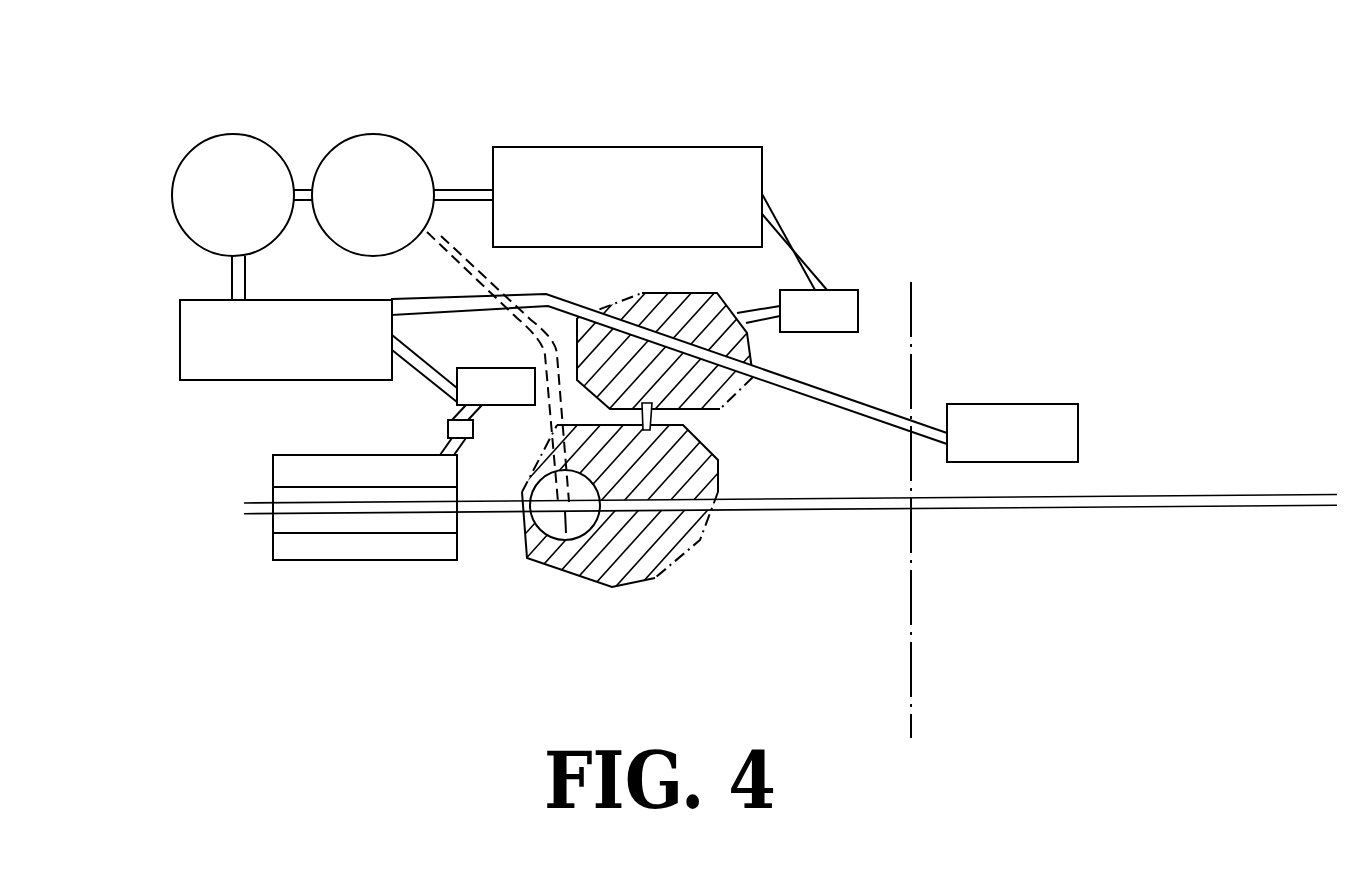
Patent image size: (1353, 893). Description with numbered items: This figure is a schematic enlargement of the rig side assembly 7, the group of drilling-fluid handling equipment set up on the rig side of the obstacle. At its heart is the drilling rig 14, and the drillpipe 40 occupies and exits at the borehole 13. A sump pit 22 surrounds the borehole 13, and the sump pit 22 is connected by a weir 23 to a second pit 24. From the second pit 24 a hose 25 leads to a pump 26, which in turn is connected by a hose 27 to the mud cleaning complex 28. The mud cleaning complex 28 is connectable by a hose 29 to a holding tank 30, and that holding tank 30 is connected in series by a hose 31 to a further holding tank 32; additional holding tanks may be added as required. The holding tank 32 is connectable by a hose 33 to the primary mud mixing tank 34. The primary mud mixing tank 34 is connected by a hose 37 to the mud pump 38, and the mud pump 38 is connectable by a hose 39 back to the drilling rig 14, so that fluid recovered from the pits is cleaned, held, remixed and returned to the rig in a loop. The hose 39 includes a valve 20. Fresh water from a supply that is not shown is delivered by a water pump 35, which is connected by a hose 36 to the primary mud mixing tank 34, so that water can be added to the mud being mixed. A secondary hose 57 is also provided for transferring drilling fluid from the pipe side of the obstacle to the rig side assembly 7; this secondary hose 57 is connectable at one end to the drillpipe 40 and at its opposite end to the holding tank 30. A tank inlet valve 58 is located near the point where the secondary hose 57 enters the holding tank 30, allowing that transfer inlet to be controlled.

The rig side assembly 7 is at (784, 43).
The borehole 13 is at (535, 565).
The drilling rig 14 is at (385, 543).
The valve 20 is at (447, 432).
The sump pit 22 is at (630, 567).
The weir 23 is at (652, 417).
The second pit 24 is at (680, 303).
The hose 25 is at (770, 313).
The pump 26 is at (843, 303).
The hose 27 is at (803, 240).
The mud cleaning complex 28 is at (640, 175).
The hose 29 is at (457, 183).
The holding tank 30 is at (380, 162).
The hose 31 is at (298, 176).
The holding tank 32 is at (204, 168).
The hose 33 is at (237, 277).
The primary mud mixing tank 34 is at (228, 365).
The water pump 35 is at (1013, 420).
The hose 36 is at (880, 407).
The hose 37 is at (423, 370).
The mud pump 38 is at (515, 377).
The hose 39 is at (463, 444).
The drillpipe 40 is at (838, 512).
The secondary hose 57 is at (437, 258).
The tank inlet valve 58 is at (425, 233).